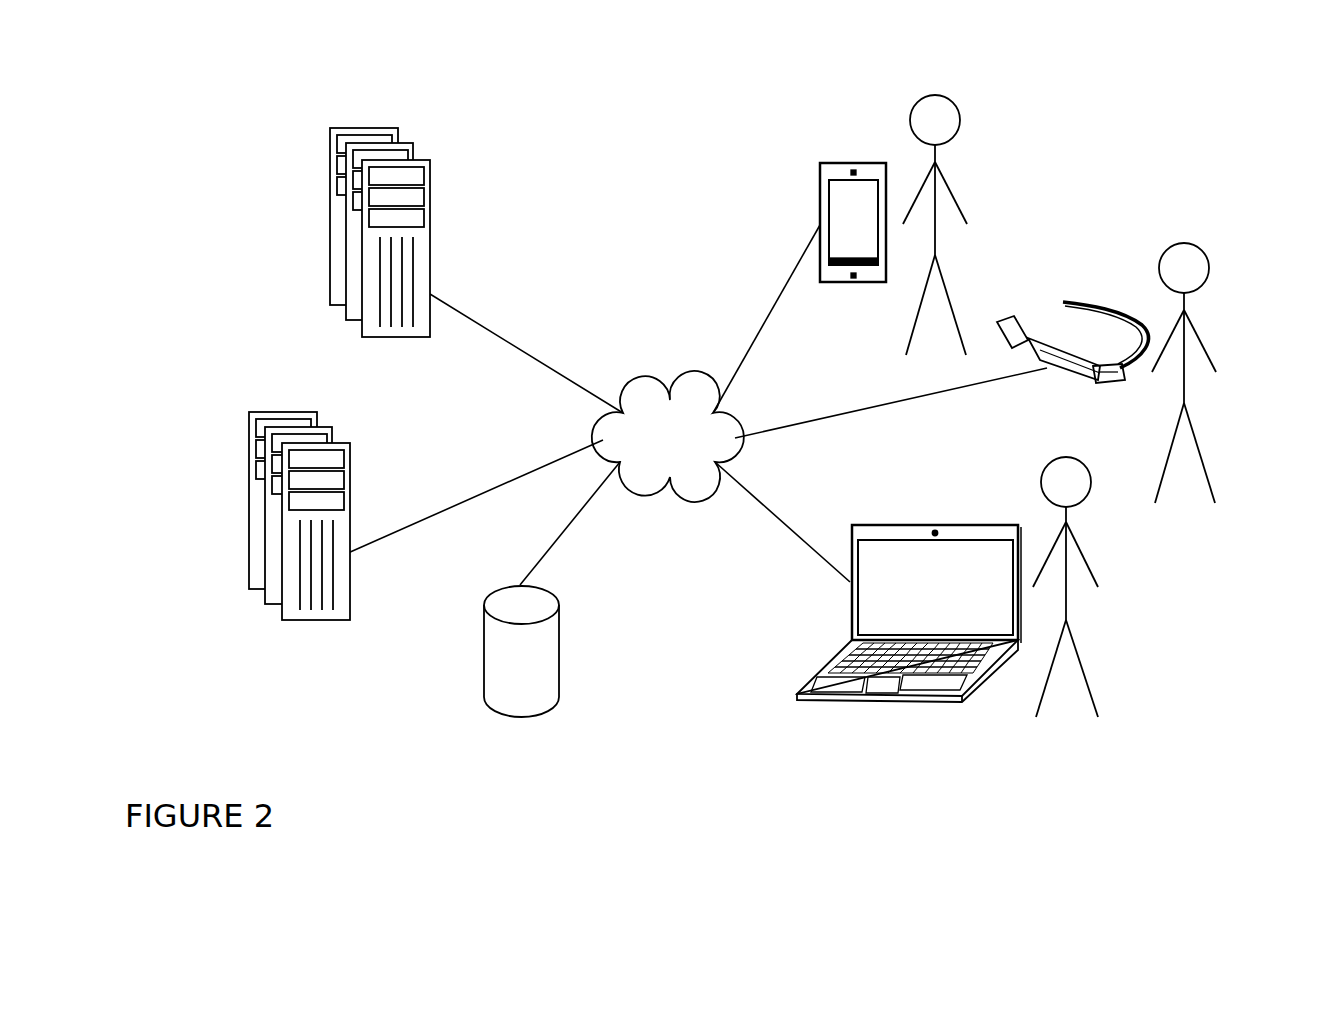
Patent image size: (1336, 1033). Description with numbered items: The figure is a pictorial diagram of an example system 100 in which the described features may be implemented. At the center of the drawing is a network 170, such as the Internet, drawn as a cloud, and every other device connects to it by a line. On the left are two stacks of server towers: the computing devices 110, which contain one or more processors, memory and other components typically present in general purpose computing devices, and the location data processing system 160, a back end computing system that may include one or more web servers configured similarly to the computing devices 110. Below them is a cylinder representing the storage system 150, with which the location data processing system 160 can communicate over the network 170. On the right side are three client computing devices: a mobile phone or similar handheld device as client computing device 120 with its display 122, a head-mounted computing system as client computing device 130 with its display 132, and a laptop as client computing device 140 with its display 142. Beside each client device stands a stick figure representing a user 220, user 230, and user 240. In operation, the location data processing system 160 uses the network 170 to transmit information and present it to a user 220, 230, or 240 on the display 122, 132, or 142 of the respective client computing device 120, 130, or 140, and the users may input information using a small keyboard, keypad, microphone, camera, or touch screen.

The system 100 is at (218, 776).
The computing devices 110 is at (430, 200).
The client computing device 120 is at (801, 222).
The display 122 is at (820, 220).
The client computing device 130 is at (1072, 336).
The display 132 is at (1115, 378).
The client computing device 140 is at (884, 613).
The display 142 is at (855, 625).
The storage system 150 is at (560, 670).
The location data processing system 160 is at (348, 485).
The network 170 is at (668, 436).
The user 220 is at (962, 215).
The user 230 is at (1215, 367).
The user 240 is at (1097, 578).